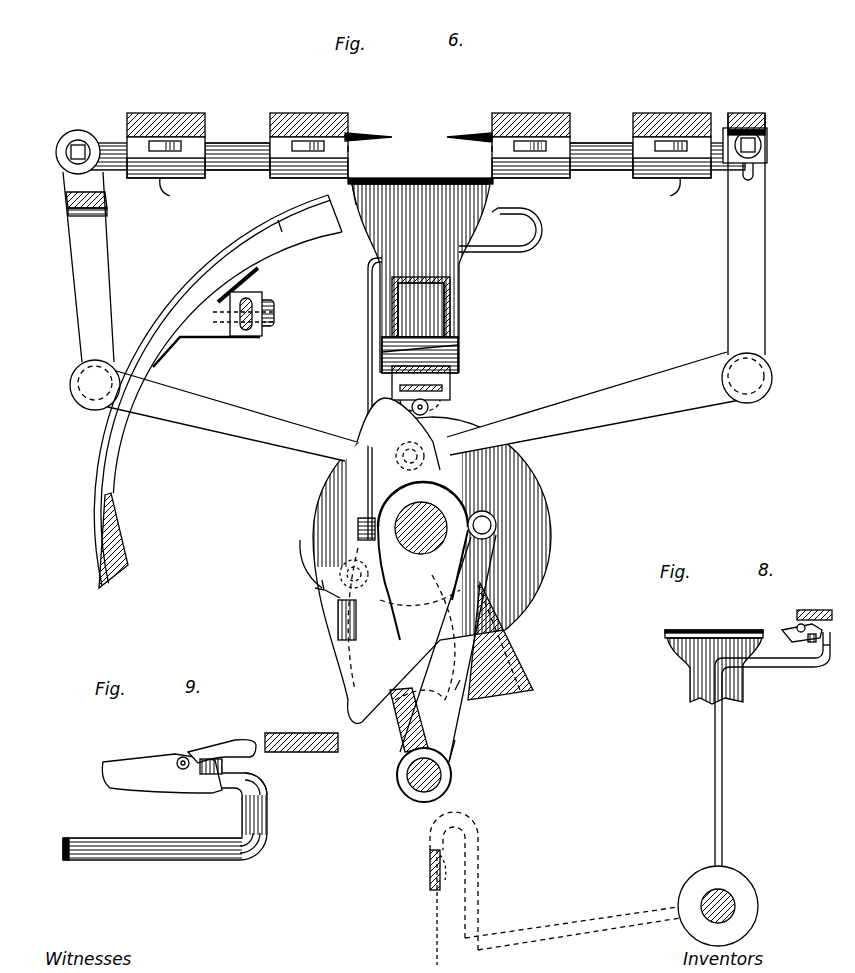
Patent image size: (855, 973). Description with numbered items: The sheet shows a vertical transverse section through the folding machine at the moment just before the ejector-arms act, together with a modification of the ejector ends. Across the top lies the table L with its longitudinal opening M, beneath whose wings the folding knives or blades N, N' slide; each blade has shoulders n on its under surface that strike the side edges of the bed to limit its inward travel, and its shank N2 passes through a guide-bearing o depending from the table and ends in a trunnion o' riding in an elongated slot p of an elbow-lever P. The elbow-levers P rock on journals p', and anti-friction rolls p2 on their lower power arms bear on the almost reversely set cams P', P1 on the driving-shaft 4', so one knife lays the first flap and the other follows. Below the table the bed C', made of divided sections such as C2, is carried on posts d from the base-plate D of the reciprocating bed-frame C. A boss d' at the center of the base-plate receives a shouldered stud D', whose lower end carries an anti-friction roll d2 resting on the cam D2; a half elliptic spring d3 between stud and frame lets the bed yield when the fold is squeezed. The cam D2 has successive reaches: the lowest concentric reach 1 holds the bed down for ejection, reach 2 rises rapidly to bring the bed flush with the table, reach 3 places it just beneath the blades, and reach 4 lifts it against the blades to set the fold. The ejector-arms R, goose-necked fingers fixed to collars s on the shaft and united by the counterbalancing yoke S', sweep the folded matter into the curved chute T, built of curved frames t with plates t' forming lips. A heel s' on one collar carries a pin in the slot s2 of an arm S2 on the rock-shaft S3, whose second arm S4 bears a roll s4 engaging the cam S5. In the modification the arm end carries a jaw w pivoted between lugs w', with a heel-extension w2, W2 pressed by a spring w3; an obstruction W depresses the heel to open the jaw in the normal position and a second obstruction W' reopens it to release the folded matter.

In FIG. 6, the longitudinal opening M is at (410, 141).
In FIG. 6, the table L is at (157, 118).
In FIG. 6, the shanks N2 is at (250, 132).
In FIG. 6, the folding knife N is at (368, 124).
In FIG. 6, the folding knife N' is at (469, 125).
In FIG. 6, the shoulders n is at (349, 150).
In FIG. 6, the guide-bearings o is at (355, 166).
In FIG. 6, the trunnions o' is at (757, 145).
In FIG. 6, the elongated slots p is at (409, 189).
In FIG. 6, the journals p' is at (402, 379).
In FIG. 6, the elbow-levers P is at (417, 287).
In FIG. 6, the bed C' is at (420, 168).
In FIG. 8, the bed C' is at (701, 667).
In FIG. 6, the bed-frame C is at (428, 278).
In FIG. 6, the bed section C2 is at (357, 187).
In FIG. 6, the shouldered stud D' is at (444, 313).
In FIG. 6, the boss d' is at (451, 310).
In FIG. 6, the base-plate D is at (441, 366).
In FIG. 6, the half elliptic spring d3 is at (392, 387).
In FIG. 6, the anti-friction roll d2 is at (430, 408).
In FIG. 6, the posts d is at (500, 230).
In FIG. 6, the ejector-arms R is at (368, 312).
In FIG. 9, the ejector-arms R is at (210, 786).
In FIG. 8, the ejector-arms R is at (715, 762).
In FIG. 6, the fourth reach 4 is at (353, 419).
In FIG. 6, the curved chute T is at (182, 284).
In FIG. 6, the curved frames t is at (214, 305).
In FIG. 6, the plates t' is at (278, 230).
In FIG. 6, the cam D2 is at (322, 511).
In FIG. 6, the anti-friction rolls p2 is at (430, 446).
In FIG. 6, the driving-shaft 4' is at (423, 561).
In FIG. 6, the first reach 1 is at (500, 500).
In FIG. 6, the anti-friction roll s4 is at (496, 520).
In FIG. 6, the cams P' is at (489, 640).
In FIG. 6, the collar s is at (354, 528).
In FIG. 6, the heel projection s' is at (347, 567).
In FIG. 6, the third reach 3 is at (330, 590).
In FIG. 6, the cam P1 is at (503, 617).
In FIG. 6, the slot s2 is at (337, 620).
In FIG. 6, the cam S5 is at (347, 678).
In FIG. 6, the yoke S' is at (508, 646).
In FIG. 6, the second reach 2 is at (460, 690).
In FIG. 6, the arm S2 is at (398, 730).
In FIG. 6, the second arm S4 is at (475, 750).
In FIG. 6, the rock-shaft S3 is at (405, 790).
In FIG. 6, the obstruction W' is at (405, 907).
In FIG. 6, the heel-extension w2 is at (430, 856).
In FIG. 9, the heel-extension w2 is at (234, 745).
In FIG. 9, the jaw w is at (162, 764).
In FIG. 8, the jaw w is at (791, 617).
In FIG. 9, the lugs w' is at (187, 749).
In FIG. 8, the lugs w' is at (790, 604).
In FIG. 9, the spring w3 is at (224, 769).
In FIG. 8, the spring w3 is at (801, 645).
In FIG. 9, the obstruction W is at (301, 730).
In FIG. 8, the obstruction W is at (814, 598).
In FIG. 8, the heel-extension W2 is at (824, 663).